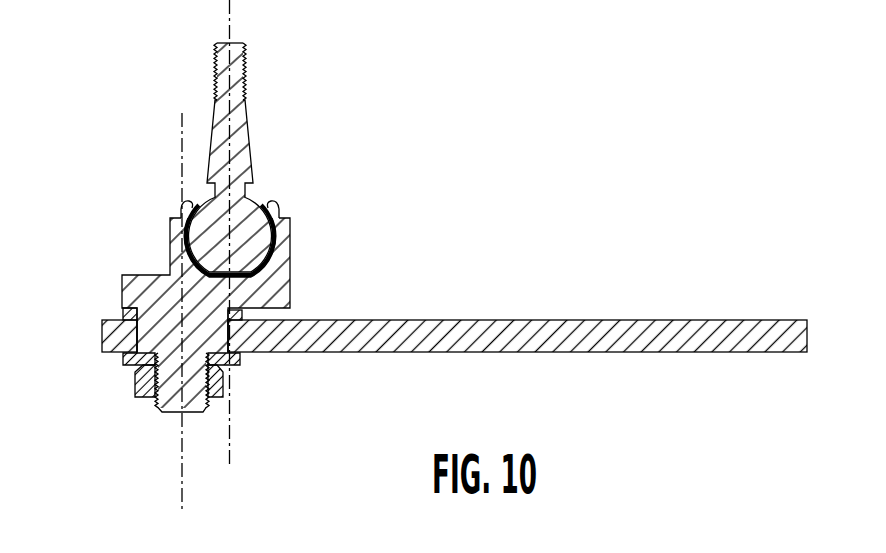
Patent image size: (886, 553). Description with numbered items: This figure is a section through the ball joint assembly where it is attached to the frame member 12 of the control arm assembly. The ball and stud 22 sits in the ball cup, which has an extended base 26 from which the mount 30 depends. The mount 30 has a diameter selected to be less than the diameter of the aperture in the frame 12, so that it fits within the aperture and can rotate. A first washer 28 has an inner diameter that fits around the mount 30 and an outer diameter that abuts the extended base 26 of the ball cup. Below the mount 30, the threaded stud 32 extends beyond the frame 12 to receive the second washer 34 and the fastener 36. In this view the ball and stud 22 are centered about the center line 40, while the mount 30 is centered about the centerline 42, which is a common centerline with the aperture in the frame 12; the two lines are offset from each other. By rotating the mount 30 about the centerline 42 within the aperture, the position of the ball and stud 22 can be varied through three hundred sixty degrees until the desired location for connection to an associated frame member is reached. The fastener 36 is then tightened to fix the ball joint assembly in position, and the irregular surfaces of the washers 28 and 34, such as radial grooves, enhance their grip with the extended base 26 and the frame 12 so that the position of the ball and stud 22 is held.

The frame member 12 is at (353, 320).
The ball and stud 22 is at (245, 134).
The extended base 26 is at (143, 283).
The first washer 28 is at (117, 316).
The mount 30 is at (150, 341).
The threaded stud 32 is at (190, 400).
The second washer 34 is at (242, 355).
The fastener 36 is at (146, 393).
The center line 40 is at (229, 31).
The centerline 42 is at (181, 168).